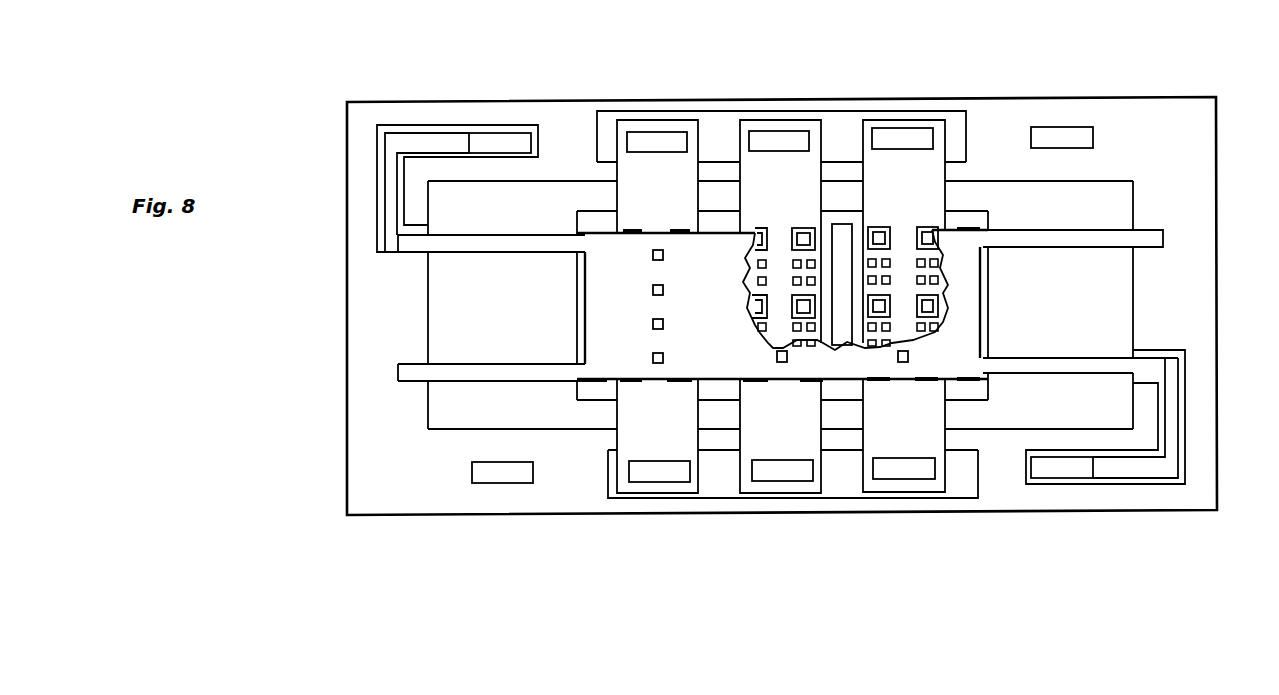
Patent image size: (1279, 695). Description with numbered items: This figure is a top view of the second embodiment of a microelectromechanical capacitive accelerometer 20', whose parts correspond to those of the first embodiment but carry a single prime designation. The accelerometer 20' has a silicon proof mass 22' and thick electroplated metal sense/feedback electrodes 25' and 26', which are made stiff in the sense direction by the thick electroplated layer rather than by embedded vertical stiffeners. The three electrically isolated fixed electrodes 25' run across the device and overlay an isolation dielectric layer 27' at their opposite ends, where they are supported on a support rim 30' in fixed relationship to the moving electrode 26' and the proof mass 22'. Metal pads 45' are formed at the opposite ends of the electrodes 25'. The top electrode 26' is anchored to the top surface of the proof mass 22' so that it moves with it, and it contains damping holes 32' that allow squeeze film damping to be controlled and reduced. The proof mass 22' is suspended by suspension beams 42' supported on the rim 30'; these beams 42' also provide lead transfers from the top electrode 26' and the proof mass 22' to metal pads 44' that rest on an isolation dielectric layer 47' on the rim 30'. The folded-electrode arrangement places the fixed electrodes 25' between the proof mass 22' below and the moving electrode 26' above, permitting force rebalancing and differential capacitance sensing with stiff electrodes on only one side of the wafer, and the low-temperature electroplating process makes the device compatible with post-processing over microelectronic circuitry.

The microelectromechanical capacitive accelerometer 20' is at (1055, 46).
The proof mass 22' is at (780, 379).
The fixed conductive electrodes 25' is at (781, 268).
The top stiffened conductive electrode 26' is at (735, 304).
The isolation dielectric layer 27' is at (810, 309).
The support rim 30' is at (809, 273).
The damping holes 32' is at (784, 394).
The suspension beams 42' is at (730, 305).
The metal pads 44' is at (802, 309).
The metal pads 45' is at (764, 310).
The isolation dielectric layer 47' is at (780, 310).